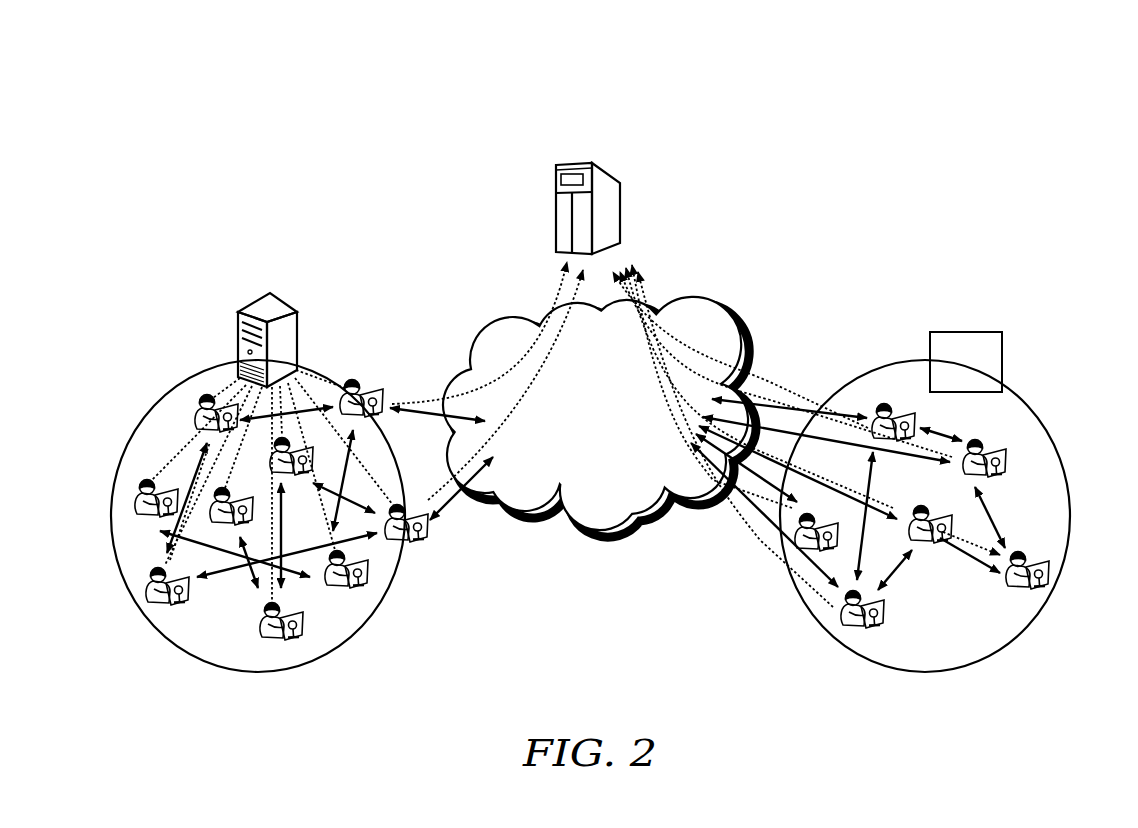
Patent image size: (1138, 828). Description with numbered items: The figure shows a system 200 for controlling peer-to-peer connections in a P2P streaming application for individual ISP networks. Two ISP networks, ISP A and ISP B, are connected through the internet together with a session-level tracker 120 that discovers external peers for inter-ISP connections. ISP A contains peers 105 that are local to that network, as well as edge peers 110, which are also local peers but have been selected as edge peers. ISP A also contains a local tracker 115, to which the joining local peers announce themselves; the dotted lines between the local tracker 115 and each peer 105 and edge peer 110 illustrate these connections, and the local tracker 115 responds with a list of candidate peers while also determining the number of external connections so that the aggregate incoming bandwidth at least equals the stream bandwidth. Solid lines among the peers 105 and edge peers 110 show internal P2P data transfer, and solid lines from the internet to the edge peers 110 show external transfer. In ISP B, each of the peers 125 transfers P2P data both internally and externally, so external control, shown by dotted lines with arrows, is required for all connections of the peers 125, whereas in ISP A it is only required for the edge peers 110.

The system 200 is at (846, 70).
The peers 105 is at (273, 448).
The edge peers 110 is at (381, 350).
The local tracker 115 is at (262, 228).
The session-level tracker 120 is at (588, 97).
The peers 125 is at (881, 402).